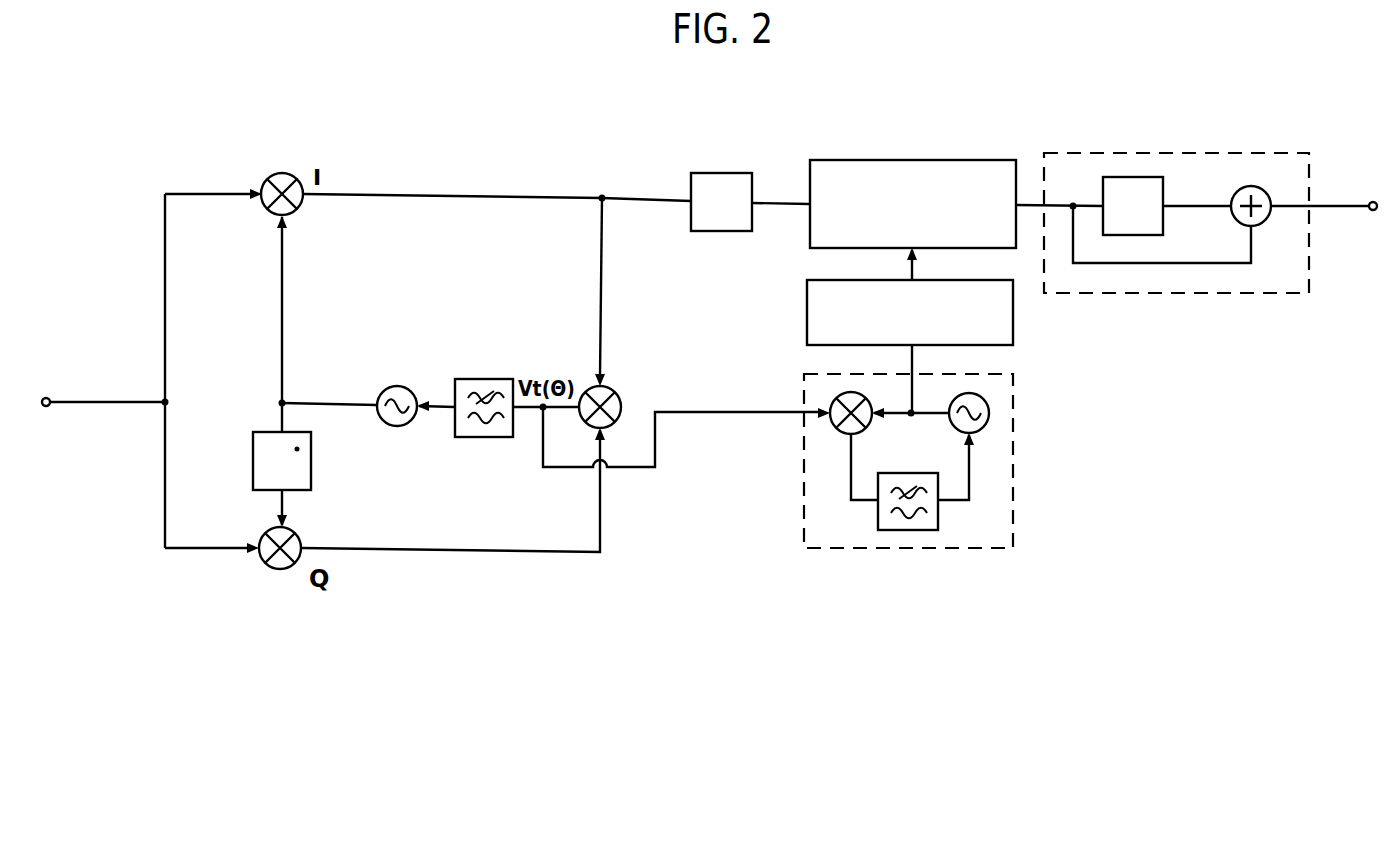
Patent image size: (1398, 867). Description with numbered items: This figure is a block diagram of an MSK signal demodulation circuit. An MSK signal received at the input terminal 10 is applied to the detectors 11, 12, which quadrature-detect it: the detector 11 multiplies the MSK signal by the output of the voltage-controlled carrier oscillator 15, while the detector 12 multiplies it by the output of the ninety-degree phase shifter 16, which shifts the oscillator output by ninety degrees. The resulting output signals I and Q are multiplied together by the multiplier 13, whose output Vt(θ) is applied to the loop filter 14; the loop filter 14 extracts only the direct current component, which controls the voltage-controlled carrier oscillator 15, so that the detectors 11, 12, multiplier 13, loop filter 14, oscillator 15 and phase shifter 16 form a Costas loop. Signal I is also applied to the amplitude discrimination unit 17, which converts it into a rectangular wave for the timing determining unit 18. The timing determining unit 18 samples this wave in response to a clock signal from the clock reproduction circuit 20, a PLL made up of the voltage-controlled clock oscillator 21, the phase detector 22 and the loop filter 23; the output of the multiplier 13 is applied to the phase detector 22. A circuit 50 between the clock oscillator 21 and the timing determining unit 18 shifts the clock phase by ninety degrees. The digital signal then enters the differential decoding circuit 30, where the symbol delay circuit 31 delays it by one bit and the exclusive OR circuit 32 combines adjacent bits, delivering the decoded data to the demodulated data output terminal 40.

The input terminal 10 is at (48, 397).
The detector 11 is at (290, 175).
The detector 12 is at (296, 532).
The multiplier 13 is at (621, 397).
The loop filter 14 is at (487, 379).
The voltage-controlled carrier oscillator 15 is at (399, 386).
The 90° phase shifter 16 is at (311, 466).
The amplitude discrimination unit 17 is at (733, 173).
The timing determining unit 18 is at (950, 170).
The clock reproduction circuit 20 is at (1016, 520).
The voltage-controlled clock oscillator 21 is at (983, 428).
The phase detector 22 is at (835, 430).
The loop filter 23 is at (938, 522).
The differential decoding circuit 30 is at (1261, 152).
The symbol delay circuit 31 is at (1163, 185).
The exclusive OR circuit 32 is at (1267, 194).
The demodulated data output terminal 40 is at (1375, 202).
The circuit 50 is at (818, 311).